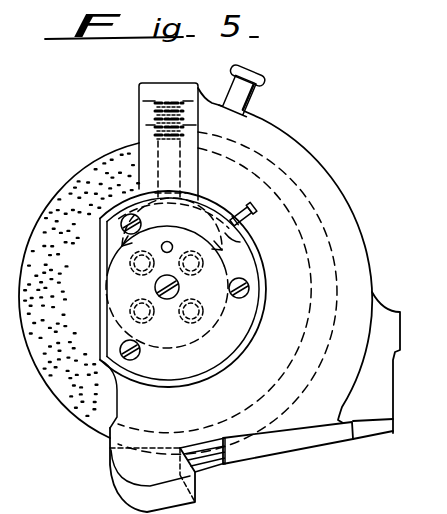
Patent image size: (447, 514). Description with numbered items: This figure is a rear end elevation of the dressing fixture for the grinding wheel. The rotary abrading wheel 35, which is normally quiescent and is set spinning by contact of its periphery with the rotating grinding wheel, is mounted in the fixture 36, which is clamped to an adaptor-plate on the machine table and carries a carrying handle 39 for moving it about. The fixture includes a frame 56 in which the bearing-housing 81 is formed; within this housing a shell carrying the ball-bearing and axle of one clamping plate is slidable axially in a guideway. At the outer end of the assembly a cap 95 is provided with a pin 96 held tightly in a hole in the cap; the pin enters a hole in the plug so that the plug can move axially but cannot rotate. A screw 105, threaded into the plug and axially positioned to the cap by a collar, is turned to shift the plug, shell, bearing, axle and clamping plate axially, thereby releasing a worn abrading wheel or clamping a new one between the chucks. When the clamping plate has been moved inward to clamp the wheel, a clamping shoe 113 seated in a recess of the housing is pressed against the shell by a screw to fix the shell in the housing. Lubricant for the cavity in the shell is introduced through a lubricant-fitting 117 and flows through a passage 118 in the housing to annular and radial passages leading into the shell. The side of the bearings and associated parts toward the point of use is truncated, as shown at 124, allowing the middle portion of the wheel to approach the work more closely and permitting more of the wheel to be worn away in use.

The rotary abrading wheel 35 is at (50, 383).
The fixture 36 is at (288, 138).
The carrying handle 39 is at (257, 93).
The frame 56 is at (112, 442).
The bearing-housing 81 is at (243, 350).
The cap 95 is at (202, 362).
The pin 96 is at (171, 243).
The screw 105 is at (181, 287).
The clamping shoe 113 is at (192, 215).
The lubricant-fitting 117 is at (254, 218).
The passage 118 is at (240, 242).
The truncated side 124 is at (100, 248).